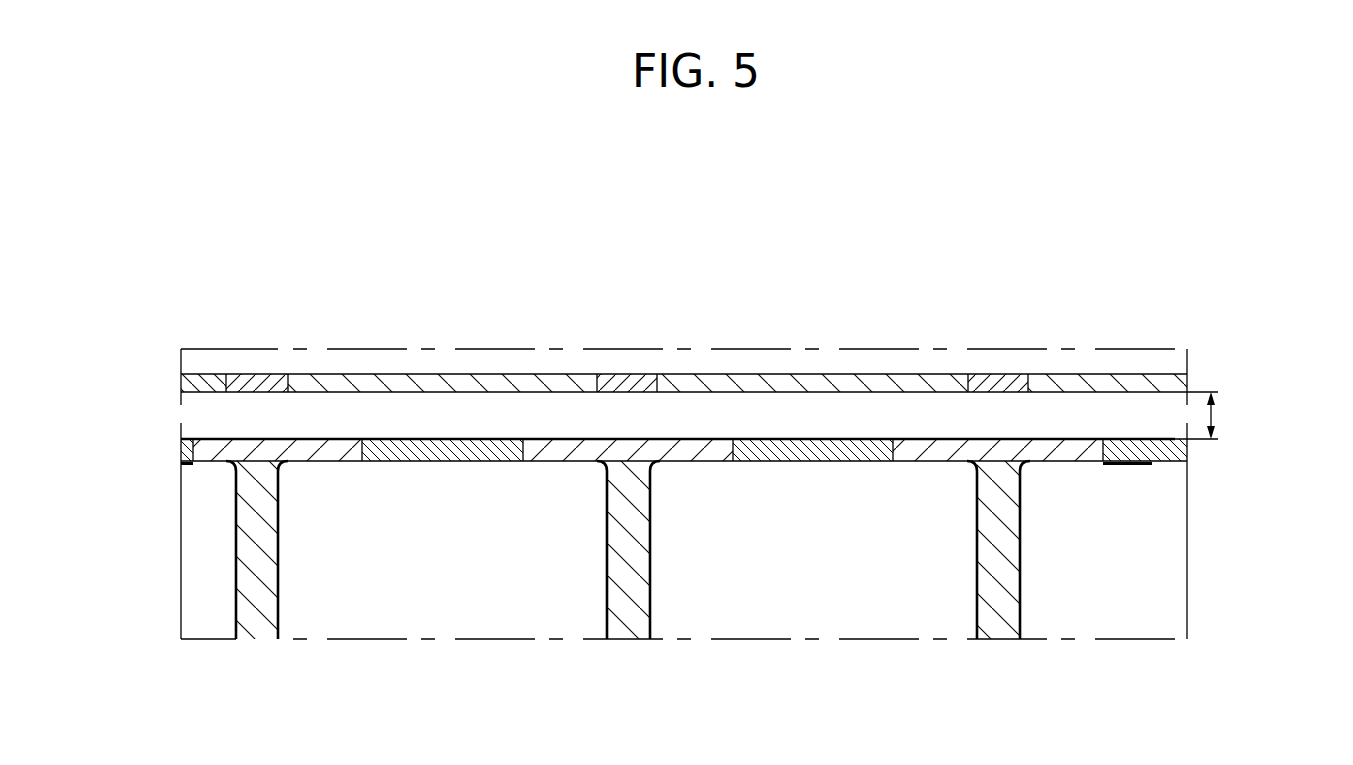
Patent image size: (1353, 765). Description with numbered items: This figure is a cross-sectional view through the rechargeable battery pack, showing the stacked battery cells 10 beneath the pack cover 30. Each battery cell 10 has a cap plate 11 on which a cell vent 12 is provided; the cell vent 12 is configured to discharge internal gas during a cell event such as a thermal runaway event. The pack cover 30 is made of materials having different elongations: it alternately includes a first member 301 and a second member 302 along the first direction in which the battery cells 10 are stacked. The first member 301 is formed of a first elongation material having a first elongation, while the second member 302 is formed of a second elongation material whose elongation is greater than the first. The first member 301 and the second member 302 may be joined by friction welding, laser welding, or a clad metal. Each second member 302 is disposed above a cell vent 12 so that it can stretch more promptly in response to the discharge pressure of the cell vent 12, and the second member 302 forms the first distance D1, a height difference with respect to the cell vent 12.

The pack cover 30 is at (671, 341).
The first member 301 is at (628, 383).
The second member 302 is at (815, 383).
The battery cell 10 is at (336, 610).
The cap plate 11 is at (940, 452).
The cell vent 12 is at (443, 452).
The first distance D1 is at (1217, 415).